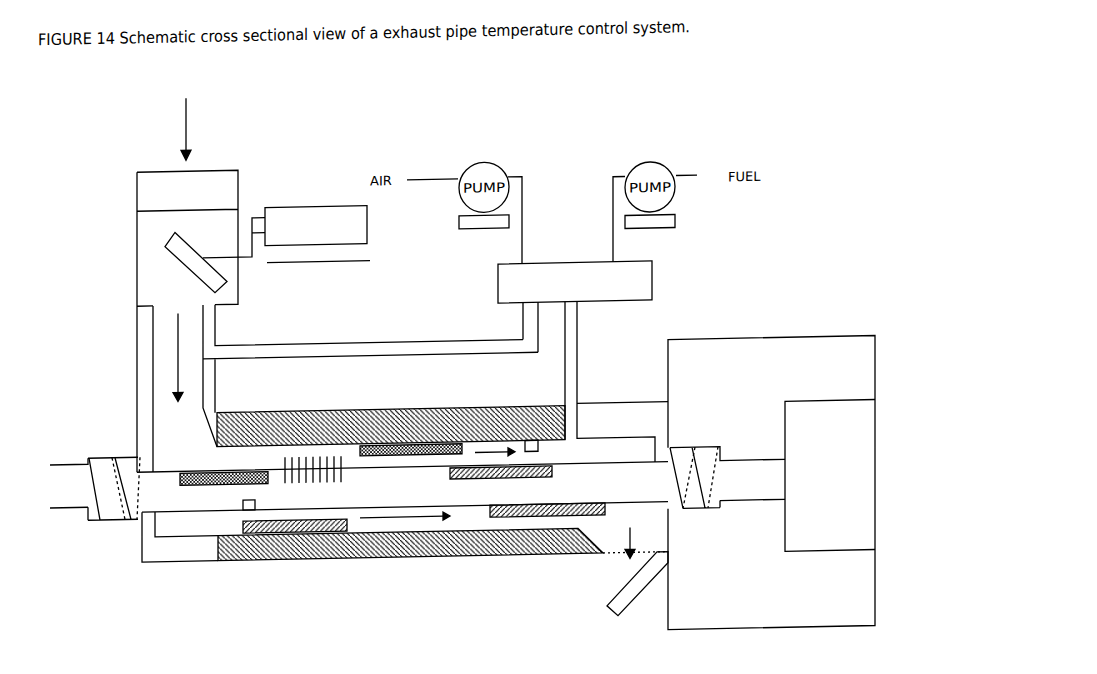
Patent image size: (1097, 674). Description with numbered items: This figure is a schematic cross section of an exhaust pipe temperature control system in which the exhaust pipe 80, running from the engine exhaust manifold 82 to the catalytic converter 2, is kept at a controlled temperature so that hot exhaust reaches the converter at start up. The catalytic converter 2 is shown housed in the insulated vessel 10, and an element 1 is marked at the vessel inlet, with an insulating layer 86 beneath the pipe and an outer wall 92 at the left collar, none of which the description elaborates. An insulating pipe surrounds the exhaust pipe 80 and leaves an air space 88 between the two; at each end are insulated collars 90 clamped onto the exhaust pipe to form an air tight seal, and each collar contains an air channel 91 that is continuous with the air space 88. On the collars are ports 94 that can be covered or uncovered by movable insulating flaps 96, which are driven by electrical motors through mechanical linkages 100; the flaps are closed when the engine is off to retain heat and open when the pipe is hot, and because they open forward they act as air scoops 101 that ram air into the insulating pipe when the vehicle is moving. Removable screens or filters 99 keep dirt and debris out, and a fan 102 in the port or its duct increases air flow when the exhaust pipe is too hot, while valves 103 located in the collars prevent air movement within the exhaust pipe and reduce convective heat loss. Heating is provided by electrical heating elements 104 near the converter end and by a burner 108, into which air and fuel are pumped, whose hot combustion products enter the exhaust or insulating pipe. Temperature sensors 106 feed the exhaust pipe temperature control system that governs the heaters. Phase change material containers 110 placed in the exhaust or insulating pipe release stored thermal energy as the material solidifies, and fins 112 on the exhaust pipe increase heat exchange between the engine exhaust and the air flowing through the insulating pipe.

The exhaust gas passage 1 is at (642, 388).
The catalytic converter 2 is at (830, 476).
The insulated vessel 10 is at (771, 483).
The exhaust pipe 80 is at (402, 486).
The exhaust manifold 82 is at (65, 483).
The insulation layer 86 is at (283, 530).
The air space 88 is at (307, 409).
The insulated collar 90 is at (622, 384).
The air channel 91 is at (193, 507).
The outer pipe wall 92 is at (143, 557).
The port 94 is at (172, 388).
The insulating flap 96 is at (150, 239).
The screen or filter 99 is at (127, 181).
The mechanical linkage 100 is at (303, 241).
The air scoop 101 is at (619, 632).
The fan 102 is at (137, 314).
The valve 103 is at (115, 439).
The electrical heating element 104 is at (230, 467).
The temperature sensor 106 is at (255, 481).
The burner 108 is at (576, 363).
The phase change material container 110 is at (335, 507).
The fin 112 is at (345, 443).